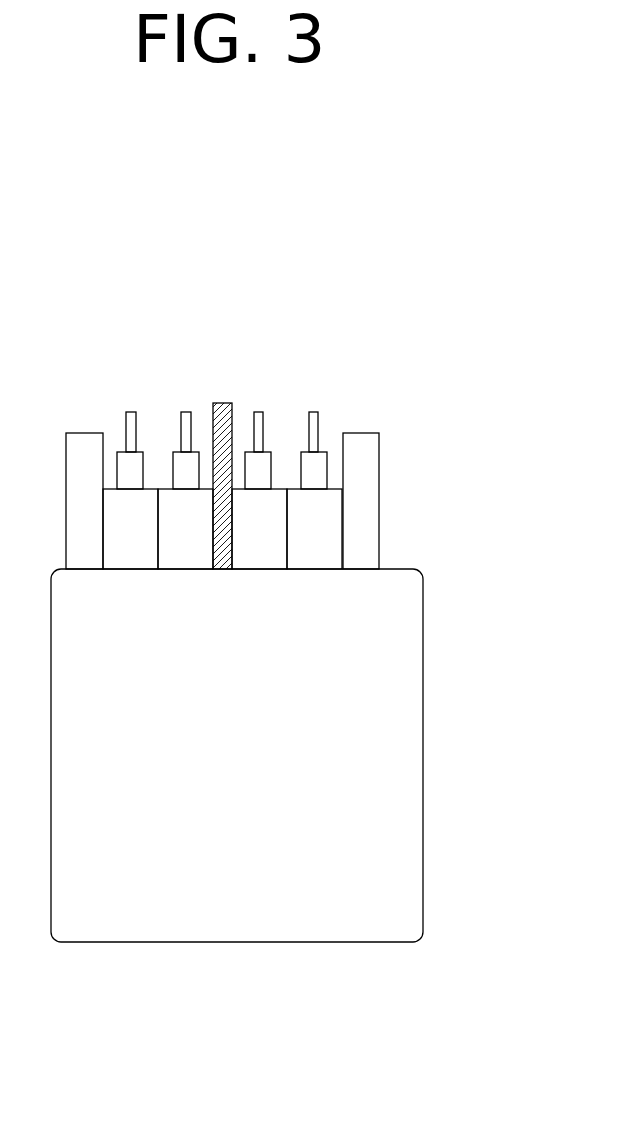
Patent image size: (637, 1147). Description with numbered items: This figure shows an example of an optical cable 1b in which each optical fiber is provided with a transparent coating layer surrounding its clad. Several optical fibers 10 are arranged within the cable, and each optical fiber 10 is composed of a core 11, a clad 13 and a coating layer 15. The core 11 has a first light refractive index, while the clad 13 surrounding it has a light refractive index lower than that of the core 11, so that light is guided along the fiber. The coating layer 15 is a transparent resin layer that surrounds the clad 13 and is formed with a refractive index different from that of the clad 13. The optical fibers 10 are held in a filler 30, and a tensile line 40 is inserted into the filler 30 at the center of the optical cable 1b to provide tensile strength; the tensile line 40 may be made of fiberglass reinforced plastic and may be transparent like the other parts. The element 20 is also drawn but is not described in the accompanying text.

The optical cable 1b is at (238, 282).
The optical fiber 10 is at (120, 395).
The core 11 is at (316, 422).
The clad 13 is at (320, 477).
The coating layer 15 is at (320, 527).
The housing 20 is at (410, 787).
The filler 30 is at (373, 459).
The tensile line 40 is at (220, 402).